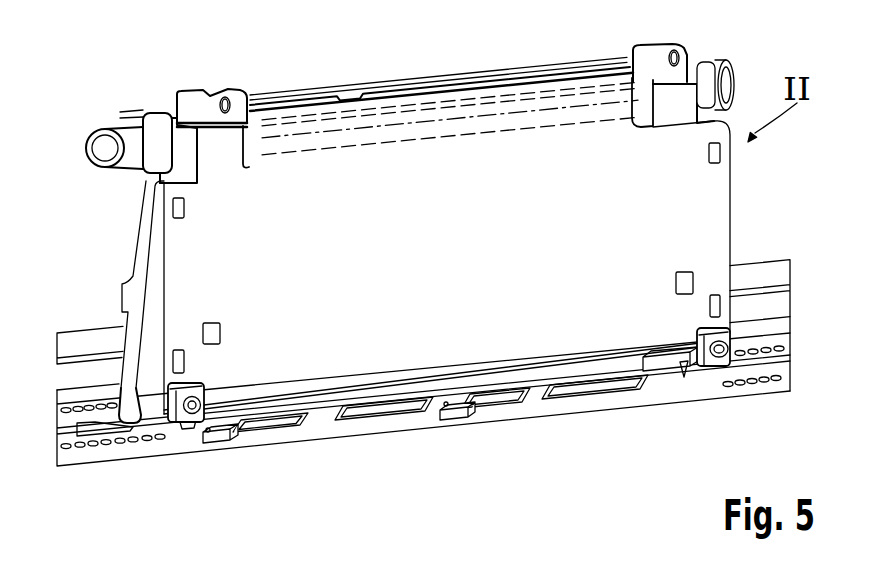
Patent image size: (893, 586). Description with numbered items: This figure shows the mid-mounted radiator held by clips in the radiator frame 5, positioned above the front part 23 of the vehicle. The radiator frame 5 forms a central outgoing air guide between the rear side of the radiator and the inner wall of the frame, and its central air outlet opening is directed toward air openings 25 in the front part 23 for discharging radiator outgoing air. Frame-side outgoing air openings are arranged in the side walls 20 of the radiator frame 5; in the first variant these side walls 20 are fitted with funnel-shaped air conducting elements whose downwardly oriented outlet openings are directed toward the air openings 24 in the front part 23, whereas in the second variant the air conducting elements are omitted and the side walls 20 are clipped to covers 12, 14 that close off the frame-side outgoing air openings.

The radiator frame 5 is at (430, 178).
The cover 12 is at (748, 210).
The cover 14 is at (155, 255).
The side walls 20 is at (145, 217).
The front part 23 is at (220, 440).
The air openings 24 is at (90, 437).
The air openings 25 is at (510, 402).